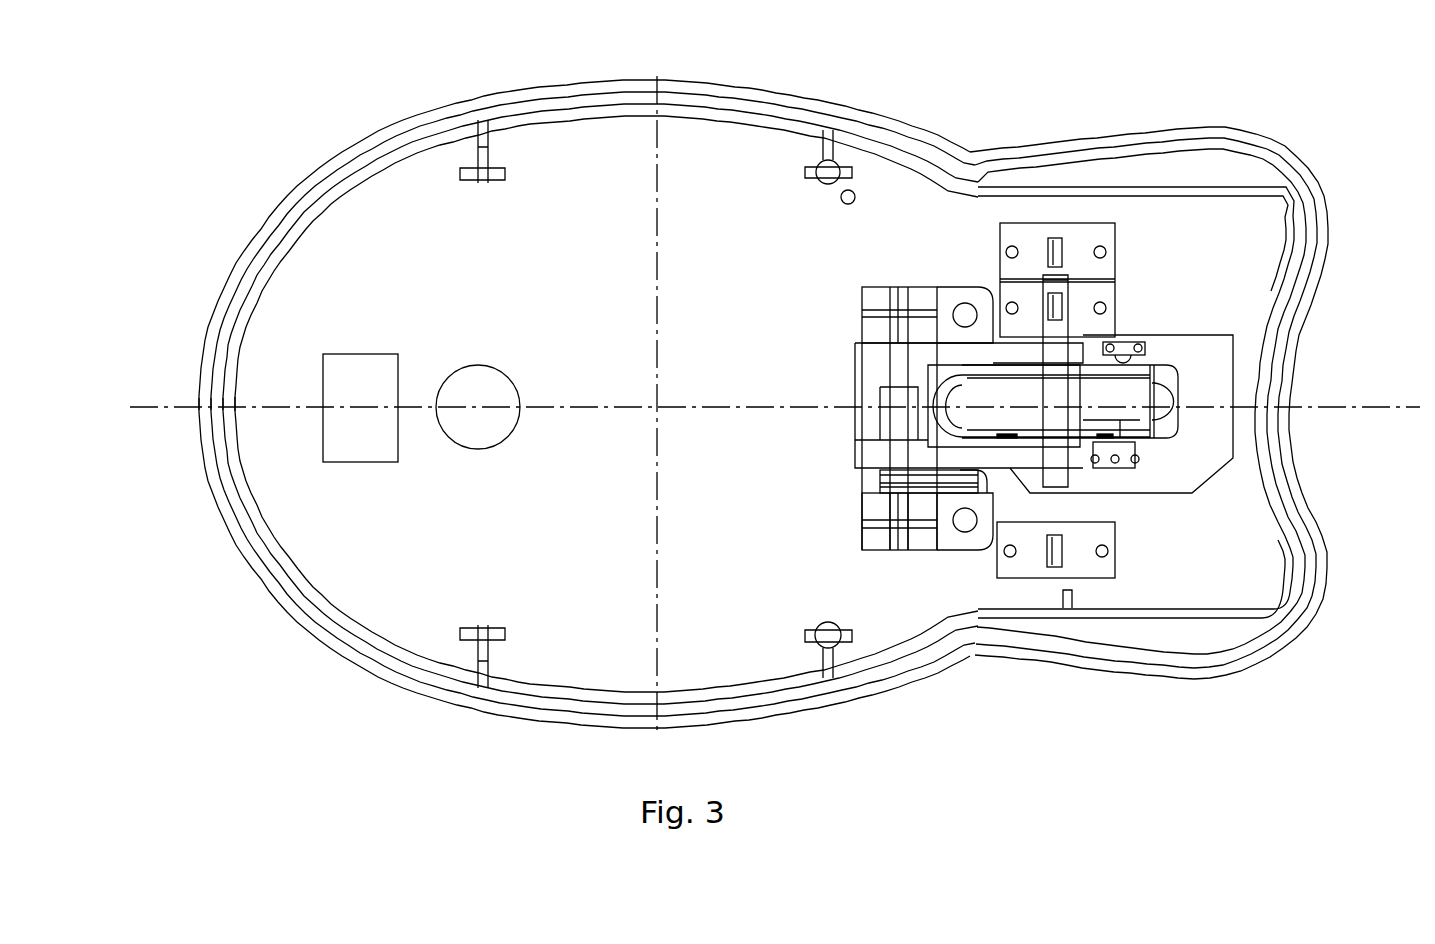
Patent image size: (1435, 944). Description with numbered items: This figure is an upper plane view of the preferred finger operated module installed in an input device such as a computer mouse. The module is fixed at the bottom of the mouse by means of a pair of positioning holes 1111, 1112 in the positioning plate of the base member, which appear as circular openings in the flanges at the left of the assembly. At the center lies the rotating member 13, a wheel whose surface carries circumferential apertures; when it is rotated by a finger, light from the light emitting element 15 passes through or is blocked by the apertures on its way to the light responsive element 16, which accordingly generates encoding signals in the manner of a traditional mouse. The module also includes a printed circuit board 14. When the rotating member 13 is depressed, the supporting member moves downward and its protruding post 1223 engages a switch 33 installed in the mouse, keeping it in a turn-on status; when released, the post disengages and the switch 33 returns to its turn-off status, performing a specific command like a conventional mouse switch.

The rotating member 13 is at (985, 388).
The positioning hole 1112 is at (965, 315).
The positioning hole 1111 is at (965, 520).
The protruding post 1223 is at (1062, 286).
The switch 33 is at (1110, 285).
The light responsive element 16 is at (1147, 350).
The light emitting element 15 is at (1125, 455).
The printed circuit board 14 is at (1193, 463).